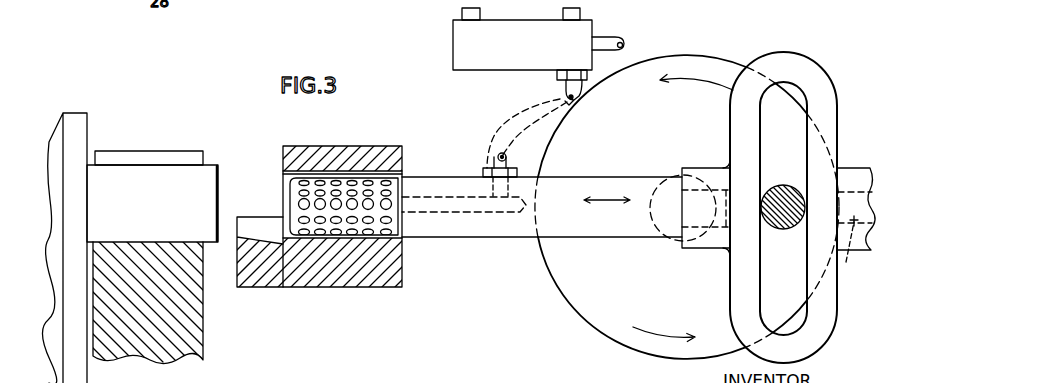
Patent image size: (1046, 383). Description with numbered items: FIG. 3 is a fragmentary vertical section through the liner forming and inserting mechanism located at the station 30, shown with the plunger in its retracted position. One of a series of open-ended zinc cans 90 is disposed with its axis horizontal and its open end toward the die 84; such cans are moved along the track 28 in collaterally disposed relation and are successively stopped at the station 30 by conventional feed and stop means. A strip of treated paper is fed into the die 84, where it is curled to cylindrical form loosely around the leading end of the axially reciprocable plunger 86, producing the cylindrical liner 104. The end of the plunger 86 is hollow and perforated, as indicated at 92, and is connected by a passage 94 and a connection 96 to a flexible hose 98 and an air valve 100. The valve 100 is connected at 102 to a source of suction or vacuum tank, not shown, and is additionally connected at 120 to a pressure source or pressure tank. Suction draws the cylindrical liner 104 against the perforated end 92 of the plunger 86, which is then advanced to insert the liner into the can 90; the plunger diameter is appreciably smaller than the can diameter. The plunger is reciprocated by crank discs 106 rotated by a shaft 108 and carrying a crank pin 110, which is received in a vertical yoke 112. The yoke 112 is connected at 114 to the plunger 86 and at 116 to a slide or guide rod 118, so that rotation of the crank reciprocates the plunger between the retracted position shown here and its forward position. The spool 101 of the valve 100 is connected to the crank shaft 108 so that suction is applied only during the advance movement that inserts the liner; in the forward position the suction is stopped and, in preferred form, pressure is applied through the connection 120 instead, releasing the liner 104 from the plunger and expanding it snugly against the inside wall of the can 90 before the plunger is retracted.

The track 28 is at (204, 337).
The station 30 is at (210, 157).
The die 84 is at (340, 146).
The plunger 86 is at (430, 177).
The zinc can 90 is at (168, 206).
The perforated end of plunger 92 is at (404, 242).
The passage 94 is at (473, 212).
The connection 96 is at (493, 158).
The flexible hose 98 is at (516, 114).
The air valve 100 is at (540, 56).
The spool 101 is at (615, 38).
The suction connection 102 is at (583, 12).
The cylindrical liner 104 is at (402, 176).
The crank disc 106 is at (614, 338).
The shaft 108 is at (666, 173).
The crank pin 110 is at (770, 184).
The vertical yoke 112 is at (828, 80).
The yoke-to-plunger connection 114 is at (716, 168).
The yoke-to-guide-rod connection 116 is at (868, 153).
The slide or guide rod 118 is at (846, 262).
The pressure connection 120 is at (480, 12).